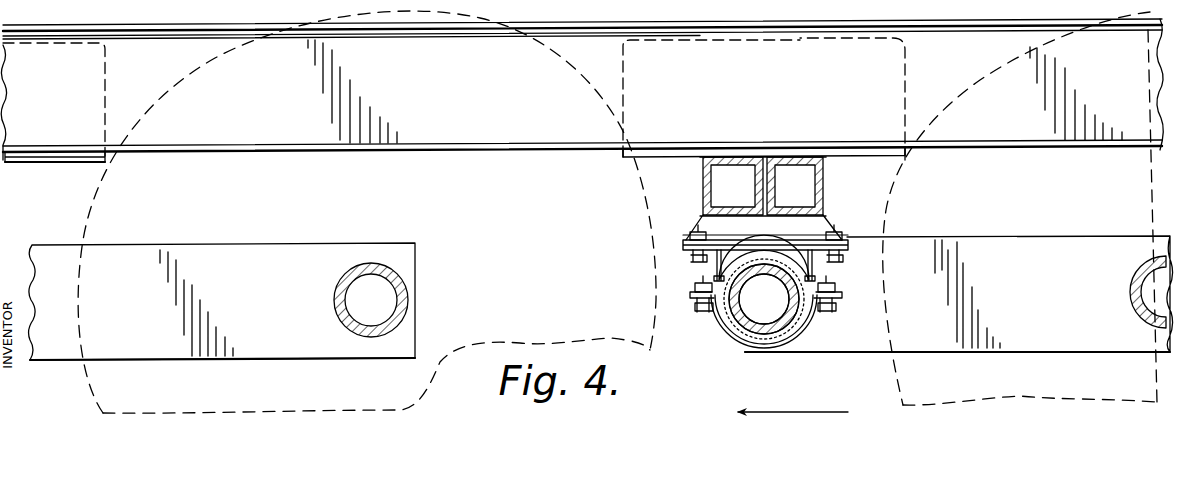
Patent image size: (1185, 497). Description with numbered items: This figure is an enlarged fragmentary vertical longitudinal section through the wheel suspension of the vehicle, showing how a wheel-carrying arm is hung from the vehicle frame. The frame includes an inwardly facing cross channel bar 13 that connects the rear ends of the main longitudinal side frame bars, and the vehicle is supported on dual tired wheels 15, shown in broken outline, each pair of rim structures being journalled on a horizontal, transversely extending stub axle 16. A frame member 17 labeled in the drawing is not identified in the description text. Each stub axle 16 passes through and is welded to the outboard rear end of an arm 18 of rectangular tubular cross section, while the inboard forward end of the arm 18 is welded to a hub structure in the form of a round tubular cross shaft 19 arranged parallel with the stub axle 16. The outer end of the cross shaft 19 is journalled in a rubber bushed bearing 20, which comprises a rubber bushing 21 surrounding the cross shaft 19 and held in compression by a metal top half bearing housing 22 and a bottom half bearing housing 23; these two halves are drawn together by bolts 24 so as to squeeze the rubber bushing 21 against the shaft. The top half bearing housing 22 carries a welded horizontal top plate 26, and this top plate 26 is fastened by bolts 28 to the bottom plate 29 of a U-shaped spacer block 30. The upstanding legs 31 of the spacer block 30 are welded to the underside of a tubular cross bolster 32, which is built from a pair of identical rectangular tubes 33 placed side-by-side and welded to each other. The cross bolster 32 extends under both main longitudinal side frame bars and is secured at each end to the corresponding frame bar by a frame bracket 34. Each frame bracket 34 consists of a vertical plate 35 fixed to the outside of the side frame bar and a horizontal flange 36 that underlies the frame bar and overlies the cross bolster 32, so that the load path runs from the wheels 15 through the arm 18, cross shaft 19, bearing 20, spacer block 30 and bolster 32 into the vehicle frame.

The cross channel bar 13 is at (96, 17).
The wheels 15 is at (92, 408).
The stub axle 16 is at (409, 300).
The cross beam 17 is at (881, 24).
The arm 18 is at (232, 245).
The cross shaft 19 is at (800, 320).
The bearing 20 is at (764, 354).
The rubber bushing 21 is at (787, 323).
The top half bearing housing 22 is at (803, 268).
The bottom half bearing housing 23 is at (733, 340).
The bolts 24 is at (703, 312).
The top plate 26 is at (845, 254).
The bolts 28 is at (692, 232).
The bottom plate 29 is at (682, 242).
The spacer block 30 is at (842, 219).
The upstanding legs 31 is at (740, 228).
The cross bolster 32 is at (784, 134).
The tubes 33 is at (790, 157).
The frame bracket 34 is at (115, 84).
The vertical plate 35 is at (621, 87).
The horizontal flange 36 is at (80, 163).